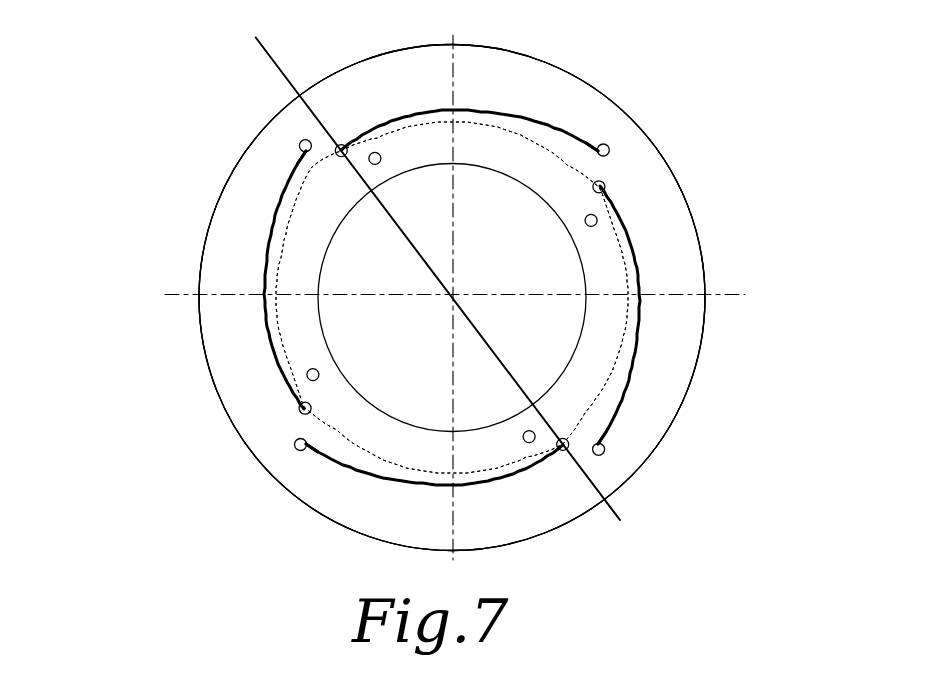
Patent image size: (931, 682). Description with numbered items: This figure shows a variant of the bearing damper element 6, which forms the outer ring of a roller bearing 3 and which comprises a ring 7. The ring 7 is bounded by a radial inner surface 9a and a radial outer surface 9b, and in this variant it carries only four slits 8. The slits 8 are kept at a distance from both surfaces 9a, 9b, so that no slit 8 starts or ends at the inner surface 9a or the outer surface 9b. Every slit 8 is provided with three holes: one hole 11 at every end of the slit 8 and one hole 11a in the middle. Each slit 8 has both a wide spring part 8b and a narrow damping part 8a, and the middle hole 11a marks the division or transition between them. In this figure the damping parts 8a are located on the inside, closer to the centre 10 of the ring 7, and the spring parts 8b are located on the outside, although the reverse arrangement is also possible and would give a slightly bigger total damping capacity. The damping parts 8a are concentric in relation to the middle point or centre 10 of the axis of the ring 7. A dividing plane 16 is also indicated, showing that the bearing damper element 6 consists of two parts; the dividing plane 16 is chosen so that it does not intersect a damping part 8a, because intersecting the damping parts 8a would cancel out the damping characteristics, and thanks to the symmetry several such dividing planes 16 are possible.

The roller bearing 3 is at (711, 96).
The bearing damper element 6 is at (111, 98).
The ring 7 is at (240, 167).
The slits 8 is at (520, 110).
The damping part 8a is at (570, 152).
The spring part 8b is at (392, 119).
The radial inner surface 9a is at (325, 332).
The radial outer surface 9b is at (257, 137).
The centre 10 is at (452, 296).
The holes 11 is at (299, 141).
The hole 11a is at (338, 145).
The dividing plane 16 is at (437, 263).